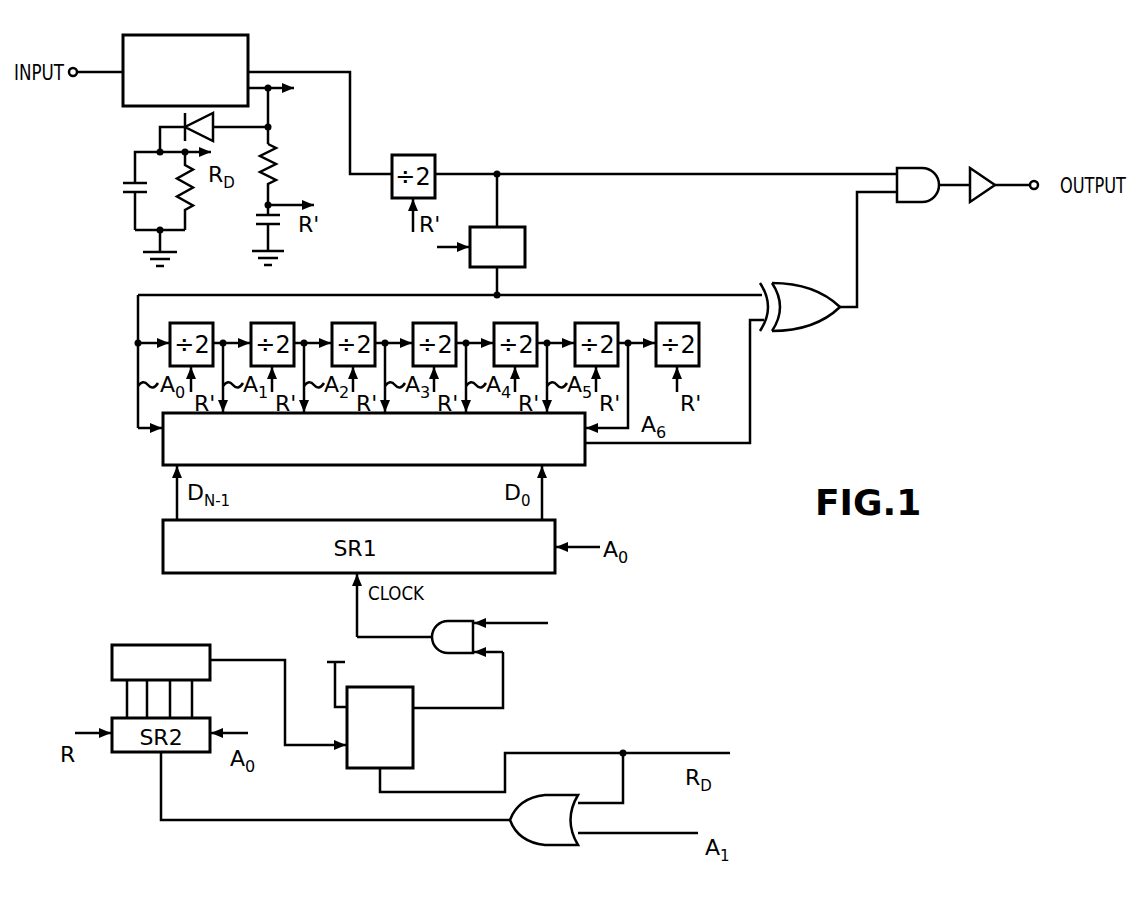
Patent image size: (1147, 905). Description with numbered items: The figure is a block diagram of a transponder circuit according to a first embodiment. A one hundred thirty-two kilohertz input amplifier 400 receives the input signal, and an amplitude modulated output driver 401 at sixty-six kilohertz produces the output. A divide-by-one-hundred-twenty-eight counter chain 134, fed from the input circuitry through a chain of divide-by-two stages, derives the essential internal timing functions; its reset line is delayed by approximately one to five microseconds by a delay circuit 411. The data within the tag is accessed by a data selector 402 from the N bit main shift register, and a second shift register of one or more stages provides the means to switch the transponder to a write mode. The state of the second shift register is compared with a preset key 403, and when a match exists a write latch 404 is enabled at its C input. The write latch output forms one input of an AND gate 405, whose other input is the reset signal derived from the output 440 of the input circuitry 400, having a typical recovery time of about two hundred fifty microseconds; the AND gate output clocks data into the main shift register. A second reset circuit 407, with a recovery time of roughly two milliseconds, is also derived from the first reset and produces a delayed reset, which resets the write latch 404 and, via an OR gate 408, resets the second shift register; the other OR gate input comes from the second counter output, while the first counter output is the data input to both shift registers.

The input amplifier 400 is at (246, 36).
The output of the input circuitry 440 is at (258, 89).
The second reset circuit 407 is at (128, 186).
The delay circuit 411 is at (264, 209).
The divide-by-128 counter chain 134 is at (524, 238).
The amplitude modulated output driver 401 is at (984, 178).
The data selector 402 is at (162, 456).
The preset key 403 is at (112, 662).
The write latch 404 is at (410, 752).
The AND gate 405 is at (441, 650).
The OR gate 408 is at (522, 829).